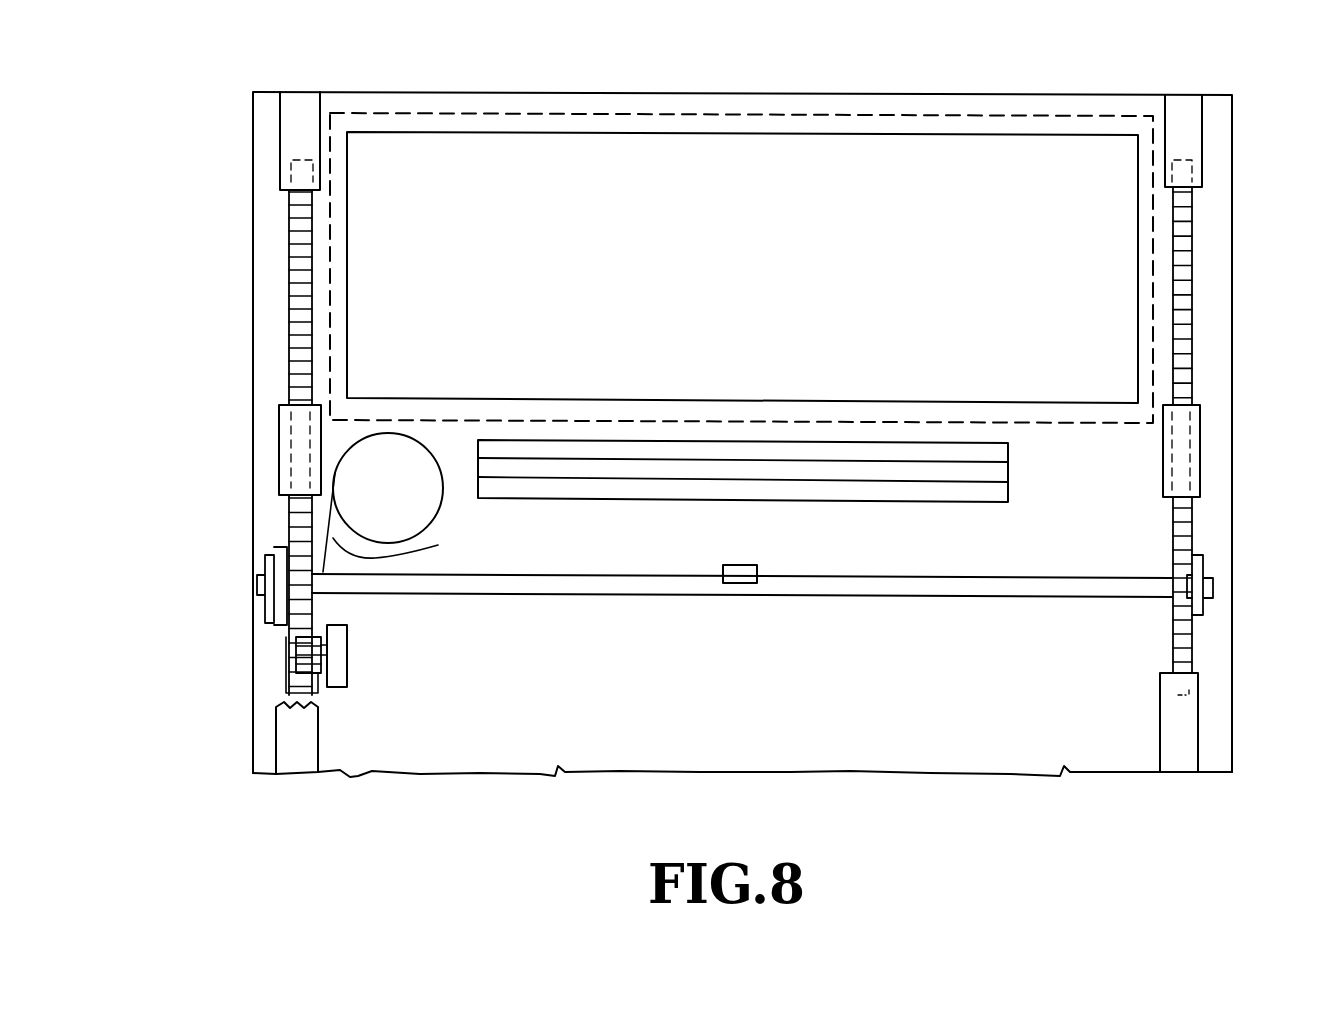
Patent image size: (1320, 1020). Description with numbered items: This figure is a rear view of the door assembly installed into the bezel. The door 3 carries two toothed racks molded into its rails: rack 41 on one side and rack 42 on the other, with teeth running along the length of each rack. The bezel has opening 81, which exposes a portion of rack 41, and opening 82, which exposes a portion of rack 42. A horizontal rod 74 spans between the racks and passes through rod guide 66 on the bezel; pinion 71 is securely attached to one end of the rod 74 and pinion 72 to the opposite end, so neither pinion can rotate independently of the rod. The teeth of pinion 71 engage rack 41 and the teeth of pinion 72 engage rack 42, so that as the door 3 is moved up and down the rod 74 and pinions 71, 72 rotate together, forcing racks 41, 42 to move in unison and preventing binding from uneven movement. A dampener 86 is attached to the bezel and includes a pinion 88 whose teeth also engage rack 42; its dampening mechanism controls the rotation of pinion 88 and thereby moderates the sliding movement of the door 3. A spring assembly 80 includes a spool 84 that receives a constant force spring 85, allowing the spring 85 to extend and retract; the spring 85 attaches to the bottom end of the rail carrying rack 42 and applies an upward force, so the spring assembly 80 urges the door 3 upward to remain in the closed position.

The door 3 is at (584, 113).
The rack 41 is at (1182, 342).
The rack 42 is at (290, 320).
The rod guide 66 is at (756, 566).
The pinion 71 is at (1178, 570).
The pinion 72 is at (283, 548).
The rod 74 is at (607, 596).
The spring assembly 80 is at (405, 428).
The opening 81 is at (1160, 628).
The opening 82 is at (268, 632).
The spool 84 is at (408, 504).
The spring 85 is at (400, 522).
The dampener 86 is at (349, 654).
The pinion 88 is at (300, 655).